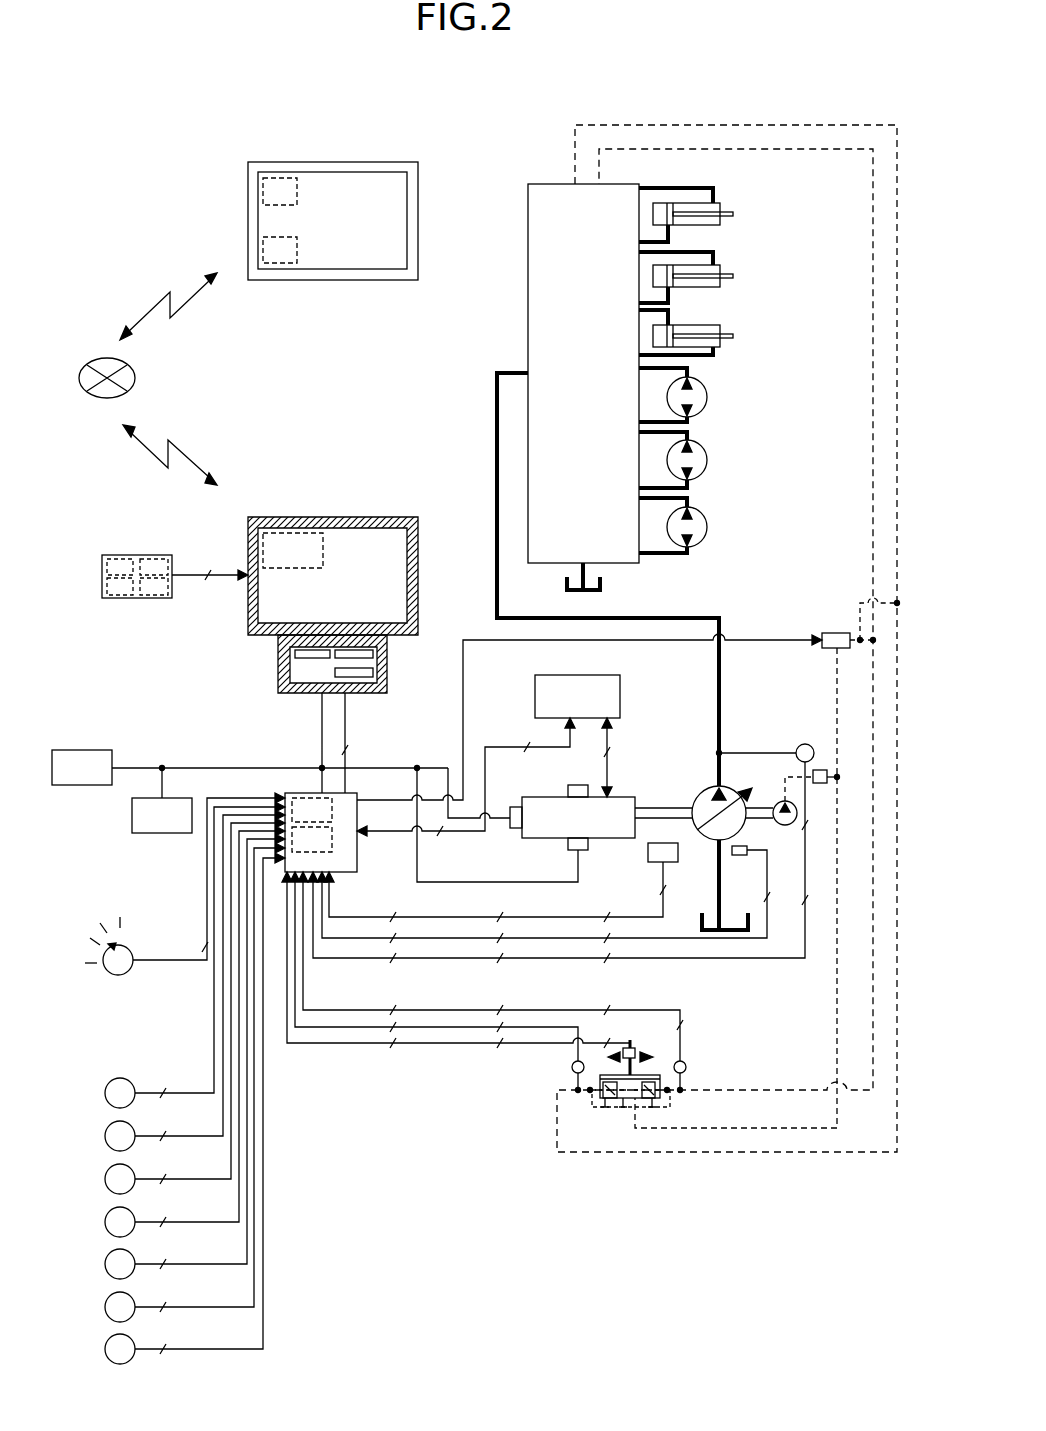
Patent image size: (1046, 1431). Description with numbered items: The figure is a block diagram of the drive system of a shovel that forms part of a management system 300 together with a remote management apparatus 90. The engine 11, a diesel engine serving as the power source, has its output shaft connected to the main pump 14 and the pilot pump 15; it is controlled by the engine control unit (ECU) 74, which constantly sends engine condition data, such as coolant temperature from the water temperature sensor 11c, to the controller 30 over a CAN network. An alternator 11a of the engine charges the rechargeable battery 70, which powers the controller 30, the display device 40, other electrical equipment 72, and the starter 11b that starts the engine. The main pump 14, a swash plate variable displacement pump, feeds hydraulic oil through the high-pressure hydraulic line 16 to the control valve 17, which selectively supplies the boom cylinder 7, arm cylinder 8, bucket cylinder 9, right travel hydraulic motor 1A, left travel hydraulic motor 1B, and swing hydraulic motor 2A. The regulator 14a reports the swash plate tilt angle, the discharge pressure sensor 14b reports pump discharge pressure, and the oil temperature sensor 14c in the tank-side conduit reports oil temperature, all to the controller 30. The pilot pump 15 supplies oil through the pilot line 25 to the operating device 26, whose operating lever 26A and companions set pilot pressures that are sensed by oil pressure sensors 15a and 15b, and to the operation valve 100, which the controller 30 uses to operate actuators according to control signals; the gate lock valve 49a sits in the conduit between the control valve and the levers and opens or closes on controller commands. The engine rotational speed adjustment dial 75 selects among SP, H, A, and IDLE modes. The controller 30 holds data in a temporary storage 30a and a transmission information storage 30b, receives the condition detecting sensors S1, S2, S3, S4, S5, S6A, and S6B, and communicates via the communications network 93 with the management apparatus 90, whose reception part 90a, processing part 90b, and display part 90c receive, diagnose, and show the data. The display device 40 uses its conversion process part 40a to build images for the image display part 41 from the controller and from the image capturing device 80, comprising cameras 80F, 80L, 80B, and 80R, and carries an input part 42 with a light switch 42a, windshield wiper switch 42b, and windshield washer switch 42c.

The management system 300 is at (812, 83).
The control valve 17 is at (548, 184).
The bucket cylinder 9 is at (731, 198).
The arm cylinder 8 is at (731, 258).
The boom cylinder 7 is at (723, 342).
The right travel hydraulic motor 1A is at (698, 378).
The left travel hydraulic motor 1B is at (698, 446).
The swing hydraulic motor 2A is at (698, 513).
The high-pressure hydraulic line 16 is at (722, 683).
The main pump 14 is at (702, 797).
The regulator 14a is at (677, 863).
The discharge pressure sensor 14b is at (800, 745).
The oil temperature sensor 14c is at (738, 855).
The pilot pump 15 is at (785, 827).
The oil pressure sensor 15a is at (686, 1068).
The oil pressure sensor 15b is at (572, 1067).
The gate lock valve 49a is at (823, 770).
The operation valve 100 is at (838, 632).
The engine 11 is at (618, 797).
The alternator 11a is at (587, 850).
The starter 11b is at (508, 828).
The water temperature sensor 11c is at (568, 787).
The engine control unit (ECU) 74 is at (580, 673).
The pilot line 25 is at (837, 982).
The operating device 26 is at (560, 990).
The operating lever 26A is at (833, 1038).
The controller 30 is at (335, 826).
The temporary storage 30a is at (332, 810).
The transmission information storage 30b is at (332, 845).
The electrical equipment 72 is at (87, 787).
The rechargeable battery 70 is at (163, 835).
The engine rotational speed adjustment dial 75 is at (133, 950).
The boom angle sensor S1 is at (102, 1093).
The arm angle sensor S2 is at (102, 1136).
The bucket angle sensor S3 is at (102, 1179).
The vehicle body tilt sensor S4 is at (102, 1222).
The swing angular velocity sensor S5 is at (102, 1264).
The right travel rotation sensor S6A is at (102, 1307).
The left travel rotation sensor S6B is at (102, 1349).
The management apparatus 90 is at (299, 229).
The reception part 90a is at (258, 188).
The processing part 90b is at (258, 253).
The display part 90c is at (360, 260).
The communications network 93 is at (87, 367).
The display device 40 is at (336, 606).
The conversion process part 40a is at (290, 517).
The image display part 41 is at (350, 557).
The input part 42 is at (336, 626).
The light switch 42a is at (375, 657).
The windshield wiper switch 42b is at (375, 673).
The windshield washer switch 42c is at (297, 655).
The image capturing device 80 is at (142, 590).
The front monitoring camera 80F is at (102, 557).
The back monitoring camera 80B is at (102, 597).
The left side monitoring camera 80L is at (172, 558).
The right side monitoring camera 80R is at (172, 597).